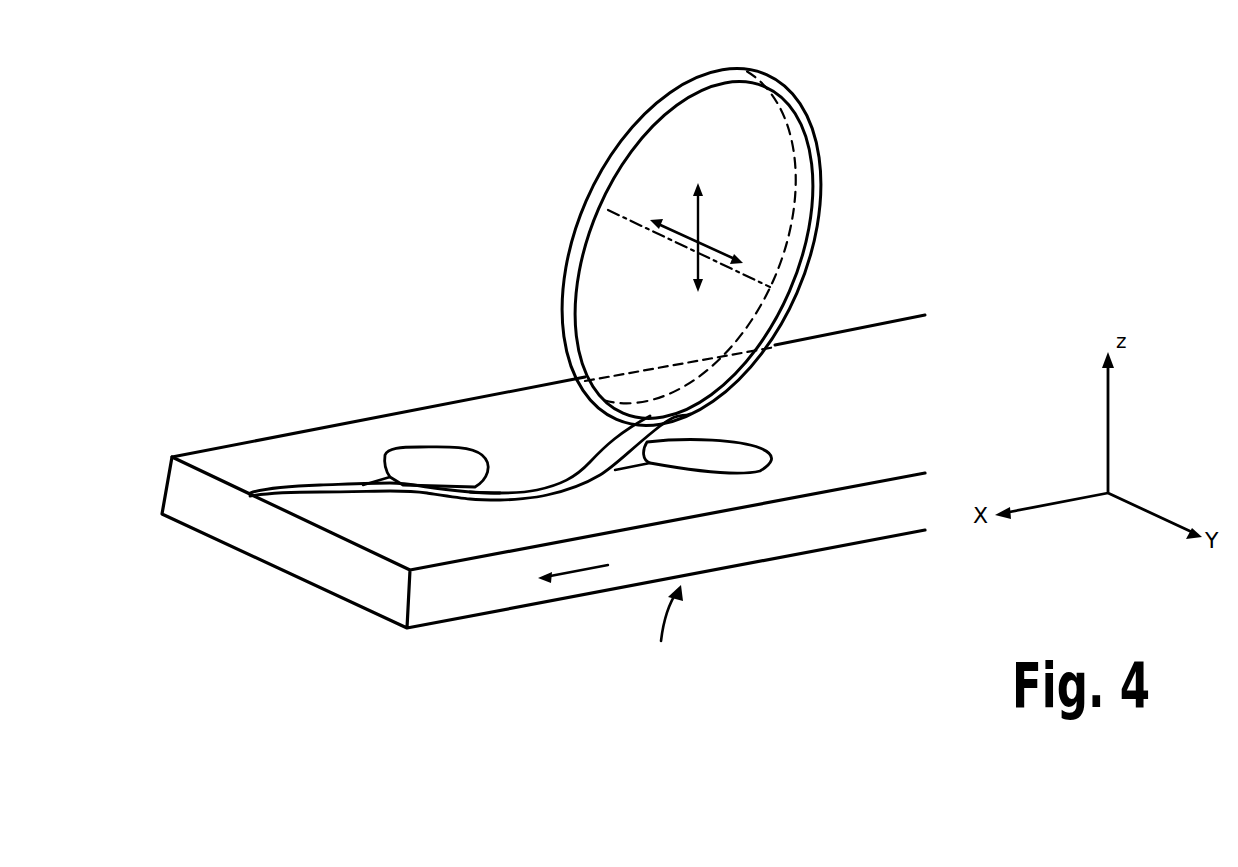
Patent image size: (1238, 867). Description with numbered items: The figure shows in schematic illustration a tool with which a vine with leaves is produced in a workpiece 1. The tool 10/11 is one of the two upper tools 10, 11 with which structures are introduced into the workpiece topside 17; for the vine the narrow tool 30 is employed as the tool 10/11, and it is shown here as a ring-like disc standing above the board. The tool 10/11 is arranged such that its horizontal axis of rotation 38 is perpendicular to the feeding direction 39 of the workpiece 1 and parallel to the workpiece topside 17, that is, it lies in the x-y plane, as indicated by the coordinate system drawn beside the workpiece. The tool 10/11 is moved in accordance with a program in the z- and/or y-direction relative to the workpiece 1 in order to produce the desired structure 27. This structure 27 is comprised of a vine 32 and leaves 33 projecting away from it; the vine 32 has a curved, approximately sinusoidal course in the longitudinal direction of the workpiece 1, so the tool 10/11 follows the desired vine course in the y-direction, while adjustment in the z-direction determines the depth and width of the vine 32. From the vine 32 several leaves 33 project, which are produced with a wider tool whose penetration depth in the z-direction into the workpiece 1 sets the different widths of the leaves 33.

The workpiece 1 is at (665, 640).
The upper tool 10 is at (827, 189).
The upper tool 11 is at (770, 168).
The workpiece topside 17 is at (848, 455).
The structure 27 is at (542, 480).
The tool 30 is at (777, 205).
The vine 32 is at (468, 497).
The leaves 33 is at (424, 469).
The horizontal axis of rotation 38 is at (757, 275).
The feeding direction 39 is at (560, 579).